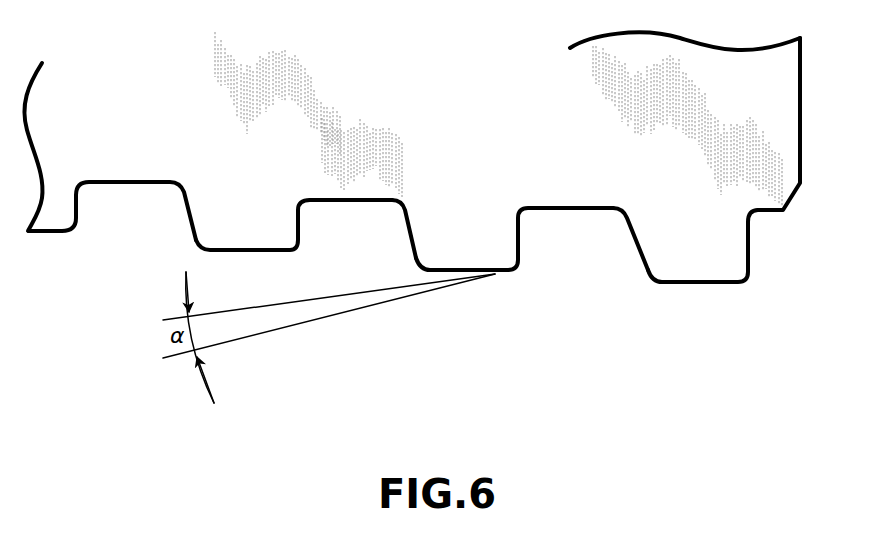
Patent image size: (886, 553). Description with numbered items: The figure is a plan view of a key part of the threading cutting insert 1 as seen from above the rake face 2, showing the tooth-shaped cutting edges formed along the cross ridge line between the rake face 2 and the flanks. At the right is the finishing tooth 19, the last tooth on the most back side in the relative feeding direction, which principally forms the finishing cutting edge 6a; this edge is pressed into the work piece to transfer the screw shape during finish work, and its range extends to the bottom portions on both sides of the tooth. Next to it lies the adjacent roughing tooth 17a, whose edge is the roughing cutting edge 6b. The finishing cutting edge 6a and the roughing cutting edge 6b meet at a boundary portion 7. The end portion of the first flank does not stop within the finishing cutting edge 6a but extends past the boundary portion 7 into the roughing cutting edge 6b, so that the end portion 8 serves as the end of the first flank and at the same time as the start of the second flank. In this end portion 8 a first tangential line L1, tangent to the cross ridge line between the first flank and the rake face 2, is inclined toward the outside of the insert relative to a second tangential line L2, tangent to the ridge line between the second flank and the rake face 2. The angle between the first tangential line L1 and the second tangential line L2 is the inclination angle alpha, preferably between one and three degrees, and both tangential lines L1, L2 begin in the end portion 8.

The cutting insert 1 is at (812, 152).
The rake face 2 is at (772, 80).
The finishing cutting edge 6a is at (684, 253).
The roughing cutting edge 6b is at (257, 226).
The boundary portion 7 is at (521, 210).
The end portion 8 is at (513, 266).
The roughing tooth 17a is at (438, 240).
The finishing tooth 19 is at (667, 265).
The first tangential line L1 is at (185, 356).
The second tangential line L2 is at (181, 318).